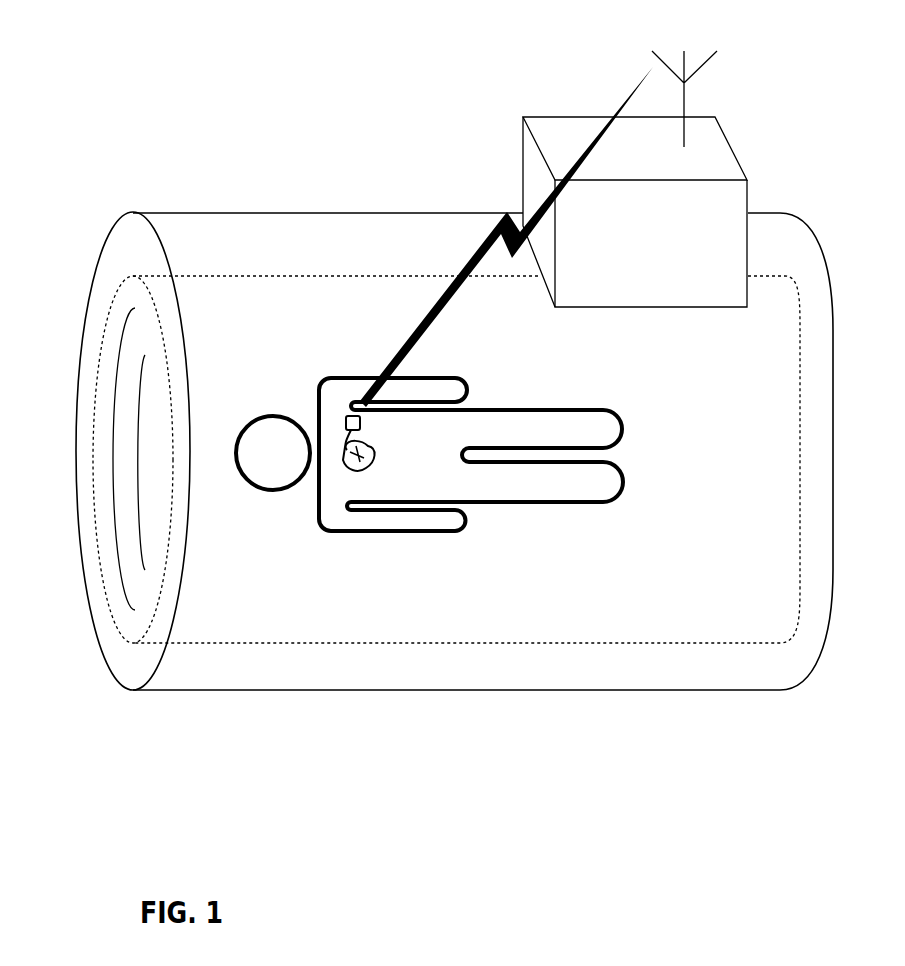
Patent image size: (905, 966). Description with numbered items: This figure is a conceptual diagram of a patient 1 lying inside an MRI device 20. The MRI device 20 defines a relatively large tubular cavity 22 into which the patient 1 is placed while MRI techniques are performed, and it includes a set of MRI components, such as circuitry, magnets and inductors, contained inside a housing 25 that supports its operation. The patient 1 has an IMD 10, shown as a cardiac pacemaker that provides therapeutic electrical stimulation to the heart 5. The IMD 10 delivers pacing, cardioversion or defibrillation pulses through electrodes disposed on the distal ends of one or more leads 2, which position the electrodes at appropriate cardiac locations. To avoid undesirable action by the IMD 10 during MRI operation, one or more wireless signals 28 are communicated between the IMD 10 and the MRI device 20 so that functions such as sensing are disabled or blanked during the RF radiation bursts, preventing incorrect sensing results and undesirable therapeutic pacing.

The patient 1 is at (429, 498).
The leads 2 is at (392, 449).
The heart 5 is at (392, 449).
The implantable medical device 10 is at (348, 403).
The MRI device 20 is at (380, 198).
The tubular cavity 22 is at (128, 260).
The housing 25 is at (535, 180).
The wireless signals 28 is at (493, 227).